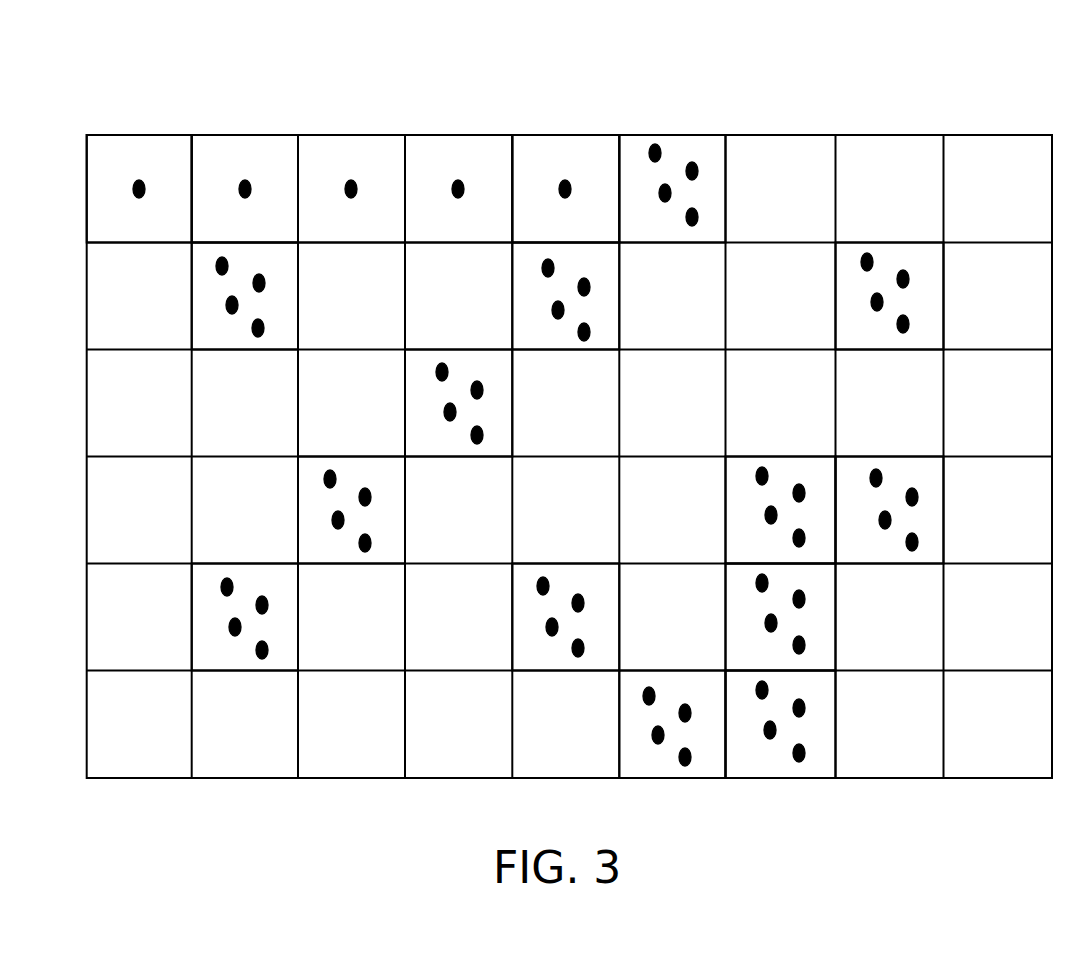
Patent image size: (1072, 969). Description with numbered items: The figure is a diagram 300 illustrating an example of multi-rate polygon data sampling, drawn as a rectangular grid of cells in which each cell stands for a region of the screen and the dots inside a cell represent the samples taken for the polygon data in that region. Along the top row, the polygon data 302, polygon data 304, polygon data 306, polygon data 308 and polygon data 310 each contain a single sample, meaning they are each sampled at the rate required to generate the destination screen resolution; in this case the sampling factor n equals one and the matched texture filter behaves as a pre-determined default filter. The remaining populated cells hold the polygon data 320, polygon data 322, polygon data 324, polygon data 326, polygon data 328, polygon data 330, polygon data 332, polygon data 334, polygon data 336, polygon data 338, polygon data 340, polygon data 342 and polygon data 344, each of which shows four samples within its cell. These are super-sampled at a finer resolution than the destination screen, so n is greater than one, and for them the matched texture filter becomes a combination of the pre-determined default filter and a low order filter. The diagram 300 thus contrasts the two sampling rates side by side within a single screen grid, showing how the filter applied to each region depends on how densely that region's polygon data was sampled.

The diagram 300 is at (930, 112).
The polygon data 302 is at (132, 153).
The polygon data 304 is at (251, 153).
The polygon data 306 is at (350, 153).
The polygon data 308 is at (464, 153).
The polygon data 310 is at (572, 153).
The polygon data 320 is at (280, 302).
The polygon data 322 is at (600, 302).
The polygon data 324 is at (688, 153).
The polygon data 326 is at (926, 307).
The polygon data 328 is at (493, 415).
The polygon data 330 is at (387, 522).
The polygon data 332 is at (739, 478).
The polygon data 334 is at (934, 515).
The polygon data 336 is at (288, 622).
The polygon data 338 is at (600, 622).
The polygon data 340 is at (820, 647).
The polygon data 342 is at (636, 693).
The polygon data 344 is at (820, 755).